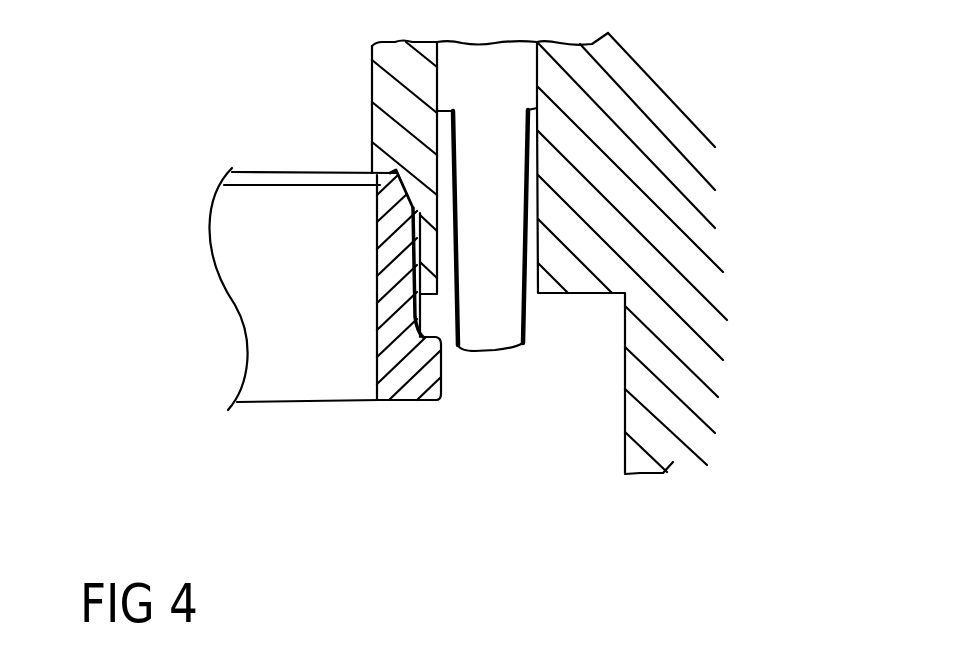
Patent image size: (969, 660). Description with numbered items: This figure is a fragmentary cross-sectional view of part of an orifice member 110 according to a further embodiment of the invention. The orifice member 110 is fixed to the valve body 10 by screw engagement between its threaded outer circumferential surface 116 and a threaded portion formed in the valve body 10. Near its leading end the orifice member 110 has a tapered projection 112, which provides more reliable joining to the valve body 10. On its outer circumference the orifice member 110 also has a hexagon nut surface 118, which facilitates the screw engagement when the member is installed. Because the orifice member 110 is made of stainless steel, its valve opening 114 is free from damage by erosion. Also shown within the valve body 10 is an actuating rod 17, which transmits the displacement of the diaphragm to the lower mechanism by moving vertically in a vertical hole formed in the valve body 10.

The valve body 10 is at (782, 248).
The actuating rod 17 is at (498, 317).
The orifice member 110 is at (377, 255).
The tapered projection 112 is at (383, 173).
The valve opening 114 is at (378, 401).
The threaded outer circumferential surface 116 is at (410, 270).
The hexagon nut surface 118 is at (445, 373).